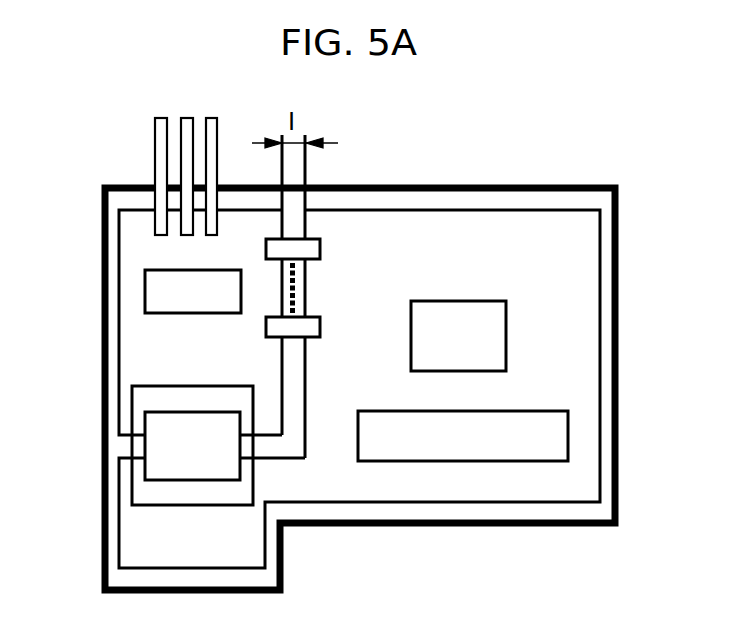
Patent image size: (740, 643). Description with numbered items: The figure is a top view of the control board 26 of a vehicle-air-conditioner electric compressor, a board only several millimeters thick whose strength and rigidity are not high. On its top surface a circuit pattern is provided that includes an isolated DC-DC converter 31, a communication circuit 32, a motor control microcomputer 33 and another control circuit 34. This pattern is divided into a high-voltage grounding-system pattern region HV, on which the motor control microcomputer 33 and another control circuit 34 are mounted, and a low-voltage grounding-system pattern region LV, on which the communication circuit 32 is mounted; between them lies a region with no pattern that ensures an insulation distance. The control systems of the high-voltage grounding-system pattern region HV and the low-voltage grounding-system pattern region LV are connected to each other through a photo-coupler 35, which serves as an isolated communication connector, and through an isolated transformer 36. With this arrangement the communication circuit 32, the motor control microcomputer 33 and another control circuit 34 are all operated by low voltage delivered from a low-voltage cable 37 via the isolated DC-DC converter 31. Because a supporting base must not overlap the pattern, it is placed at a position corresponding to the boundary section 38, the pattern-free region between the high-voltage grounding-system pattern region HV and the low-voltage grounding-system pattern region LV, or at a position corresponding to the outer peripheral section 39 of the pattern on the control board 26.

The control board 26 is at (558, 185).
The isolated DC-DC converter 31 is at (196, 397).
The communication circuit 32 is at (144, 285).
The motor control microcomputer 33 is at (507, 328).
The another control circuit 34 is at (383, 410).
The photo-coupler 35 is at (321, 250).
The isolated transformer 36 is at (197, 470).
The low-voltage cable 37 is at (154, 147).
The boundary section 38 is at (122, 447).
The outer peripheral section 39 is at (382, 527).
The high-voltage grounding-system pattern region HV is at (432, 209).
The low-voltage grounding-system pattern region LV is at (117, 318).